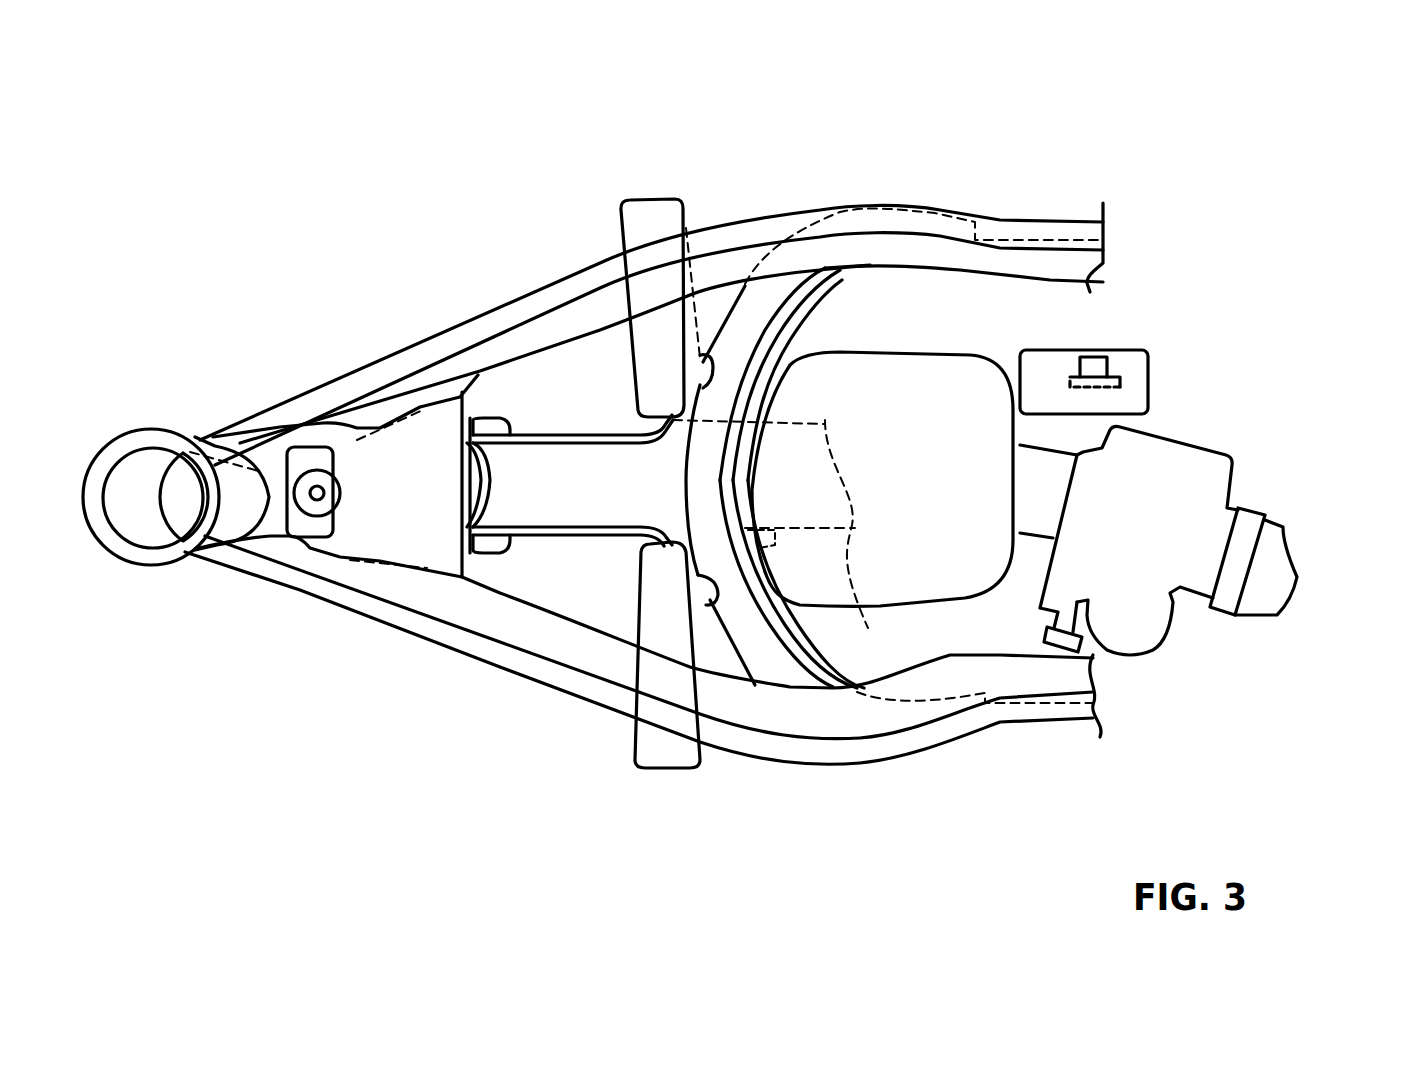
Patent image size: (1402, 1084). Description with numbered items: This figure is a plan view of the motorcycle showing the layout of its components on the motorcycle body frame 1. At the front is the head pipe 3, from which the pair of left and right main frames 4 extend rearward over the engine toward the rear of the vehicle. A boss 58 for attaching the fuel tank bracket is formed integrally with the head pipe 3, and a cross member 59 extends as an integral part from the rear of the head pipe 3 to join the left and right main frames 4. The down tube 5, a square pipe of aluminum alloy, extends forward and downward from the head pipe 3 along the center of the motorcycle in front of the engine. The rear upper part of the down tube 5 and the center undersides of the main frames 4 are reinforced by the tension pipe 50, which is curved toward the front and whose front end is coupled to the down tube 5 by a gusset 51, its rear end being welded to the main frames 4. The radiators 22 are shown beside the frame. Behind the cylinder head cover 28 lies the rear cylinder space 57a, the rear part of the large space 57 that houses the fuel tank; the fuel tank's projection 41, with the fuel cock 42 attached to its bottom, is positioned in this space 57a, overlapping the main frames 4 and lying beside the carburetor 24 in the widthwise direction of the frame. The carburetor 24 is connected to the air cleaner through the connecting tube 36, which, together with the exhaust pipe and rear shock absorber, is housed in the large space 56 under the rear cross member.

The motorcycle body frame 1 is at (285, 372).
The head pipe 3 is at (123, 568).
The main frames 4 is at (583, 268).
The down tube 5 is at (816, 547).
The radiators 22 is at (620, 207).
The carburetor 24 is at (1210, 563).
The cylinder head cover 28 is at (873, 367).
The connecting tube 36 is at (1273, 530).
The projection 41 is at (1140, 360).
The fuel cock 42 is at (1100, 347).
The tension pipe 50 is at (768, 298).
The gusset 51 is at (547, 447).
The space 56 is at (1258, 410).
The space 57 is at (987, 642).
The rear cylinder space 57a is at (1088, 338).
The boss 58 is at (319, 478).
The cross member 59 is at (430, 433).